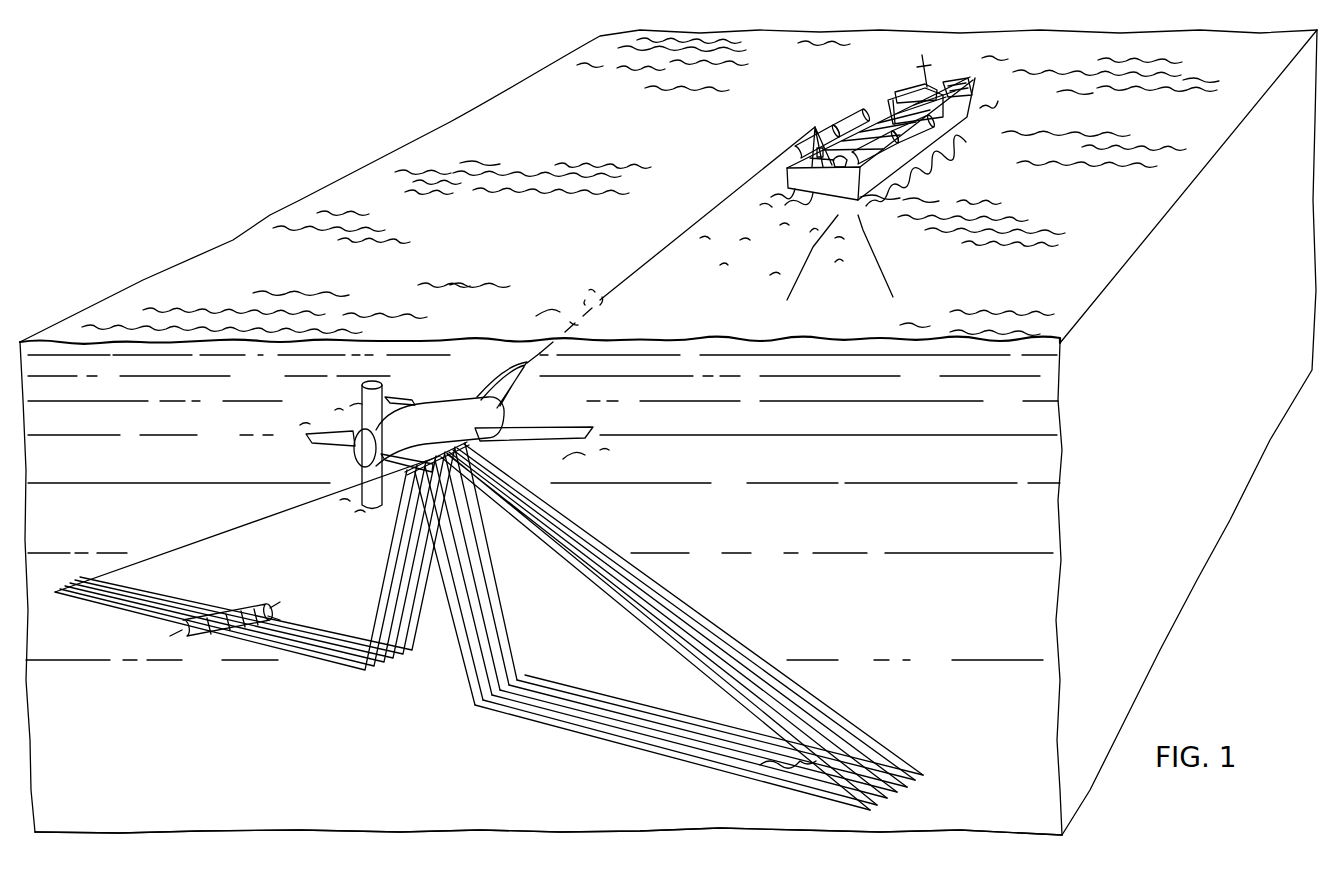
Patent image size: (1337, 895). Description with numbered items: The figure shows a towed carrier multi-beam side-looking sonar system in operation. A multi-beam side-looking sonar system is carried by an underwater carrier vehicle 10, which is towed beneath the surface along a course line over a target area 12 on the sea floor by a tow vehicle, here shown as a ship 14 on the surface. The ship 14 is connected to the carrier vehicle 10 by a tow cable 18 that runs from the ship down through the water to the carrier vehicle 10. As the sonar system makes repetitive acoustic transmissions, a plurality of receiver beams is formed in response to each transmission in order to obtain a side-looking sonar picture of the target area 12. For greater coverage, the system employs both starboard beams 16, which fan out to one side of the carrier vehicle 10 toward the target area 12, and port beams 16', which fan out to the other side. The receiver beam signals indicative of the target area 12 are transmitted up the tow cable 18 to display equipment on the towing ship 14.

The underwater carrier vehicle 10 is at (450, 415).
The target area 12 is at (381, 740).
The ship 14 is at (878, 123).
The starboard beams 16 is at (669, 626).
The port beams 16' is at (255, 558).
The tow cable 18 is at (735, 196).